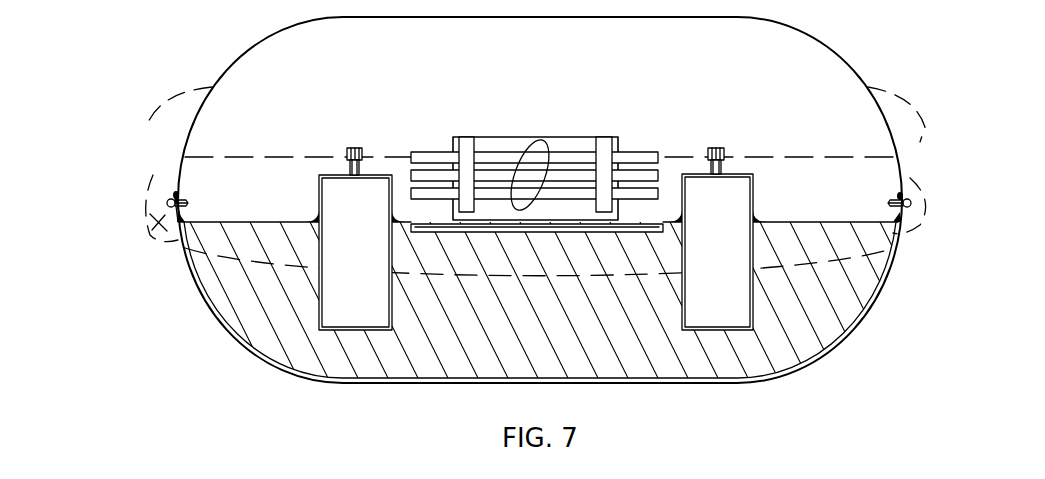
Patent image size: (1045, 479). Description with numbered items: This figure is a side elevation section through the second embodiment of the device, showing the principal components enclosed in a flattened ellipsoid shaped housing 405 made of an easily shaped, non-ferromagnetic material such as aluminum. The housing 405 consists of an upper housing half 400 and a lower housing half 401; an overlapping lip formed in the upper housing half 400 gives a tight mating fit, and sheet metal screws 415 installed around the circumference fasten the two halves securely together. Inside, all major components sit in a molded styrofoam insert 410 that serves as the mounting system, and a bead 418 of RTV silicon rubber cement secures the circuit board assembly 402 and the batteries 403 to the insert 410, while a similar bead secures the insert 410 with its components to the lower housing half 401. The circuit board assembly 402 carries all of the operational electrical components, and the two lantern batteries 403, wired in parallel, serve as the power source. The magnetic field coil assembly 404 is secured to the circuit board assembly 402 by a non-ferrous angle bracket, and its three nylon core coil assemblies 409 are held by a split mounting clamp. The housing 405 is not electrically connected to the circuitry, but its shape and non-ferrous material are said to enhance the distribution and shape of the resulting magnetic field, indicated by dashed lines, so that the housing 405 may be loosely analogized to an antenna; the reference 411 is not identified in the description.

The upper housing half 400 is at (165, 125).
The lower housing half 401 is at (251, 349).
The circuit board assembly 402 is at (430, 222).
The battery power source 403 is at (720, 197).
The magnetic field coil assembly 404 is at (532, 142).
The housing 405 is at (824, 357).
The nylon core coil assemblies 409 is at (672, 178).
The molded styrofoam insert 410 is at (262, 277).
The liquid surface 411 is at (180, 223).
The sheet metal screws 415 is at (172, 205).
The bead of RTV silicon rubber cement 418 is at (183, 201).